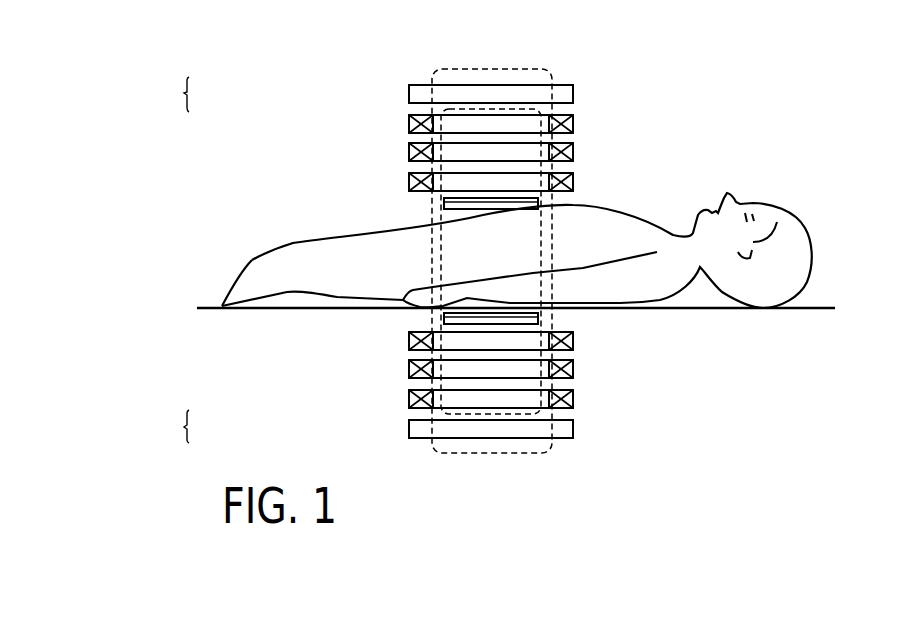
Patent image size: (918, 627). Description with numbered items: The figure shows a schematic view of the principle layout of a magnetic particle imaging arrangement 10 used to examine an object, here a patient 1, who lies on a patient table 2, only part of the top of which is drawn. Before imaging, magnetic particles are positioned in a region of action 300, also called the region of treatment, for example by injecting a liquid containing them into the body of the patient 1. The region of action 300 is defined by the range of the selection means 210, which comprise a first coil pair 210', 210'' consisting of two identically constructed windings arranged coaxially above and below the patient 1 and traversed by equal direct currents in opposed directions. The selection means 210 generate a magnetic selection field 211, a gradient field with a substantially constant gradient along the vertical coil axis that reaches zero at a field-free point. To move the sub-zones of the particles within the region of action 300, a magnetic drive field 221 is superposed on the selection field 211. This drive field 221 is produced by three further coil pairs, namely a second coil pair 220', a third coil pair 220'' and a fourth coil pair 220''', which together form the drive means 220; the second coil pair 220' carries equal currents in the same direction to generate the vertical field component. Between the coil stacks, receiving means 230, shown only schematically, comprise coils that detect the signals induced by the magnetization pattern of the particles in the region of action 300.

The object 1 is at (269, 268).
The patient table 2 is at (802, 310).
The MPI arrangement 10 is at (728, 105).
The selection means 210 is at (352, 233).
The first coil pair winding 210' is at (533, 98).
The first coil pair winding 210'' is at (536, 434).
The magnetic selection field 211 is at (452, 68).
The drive means 220 is at (352, 261).
The second coil pair 220' is at (445, 263).
The third coil pair 220'' is at (536, 265).
The fourth coil pair 220''' is at (445, 261).
The magnetic drive field 221 is at (510, 108).
The receiving means 230 is at (444, 199).
The region of action 300 is at (515, 265).